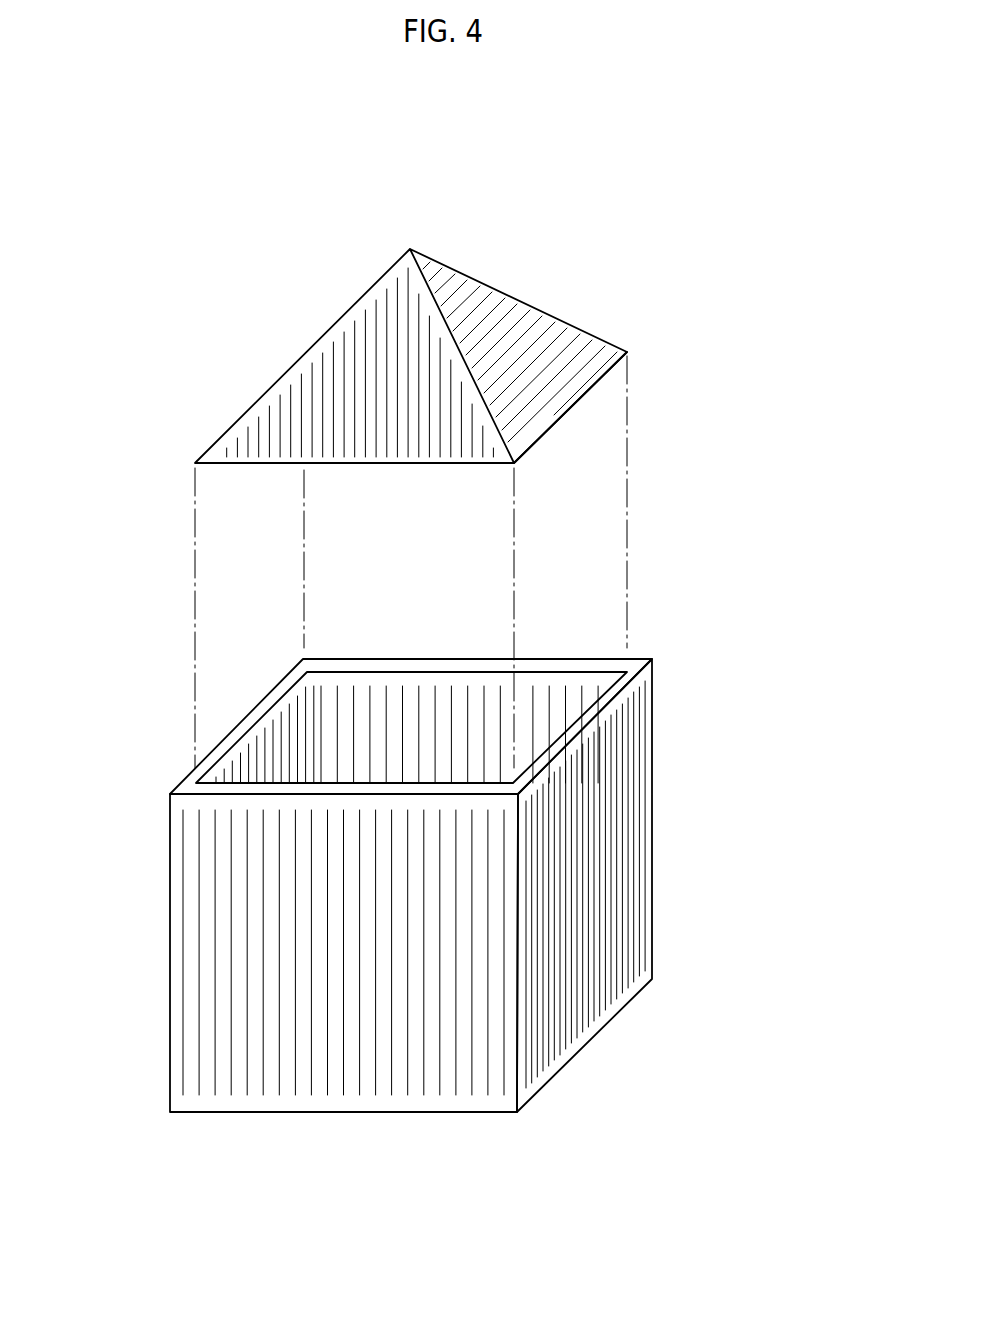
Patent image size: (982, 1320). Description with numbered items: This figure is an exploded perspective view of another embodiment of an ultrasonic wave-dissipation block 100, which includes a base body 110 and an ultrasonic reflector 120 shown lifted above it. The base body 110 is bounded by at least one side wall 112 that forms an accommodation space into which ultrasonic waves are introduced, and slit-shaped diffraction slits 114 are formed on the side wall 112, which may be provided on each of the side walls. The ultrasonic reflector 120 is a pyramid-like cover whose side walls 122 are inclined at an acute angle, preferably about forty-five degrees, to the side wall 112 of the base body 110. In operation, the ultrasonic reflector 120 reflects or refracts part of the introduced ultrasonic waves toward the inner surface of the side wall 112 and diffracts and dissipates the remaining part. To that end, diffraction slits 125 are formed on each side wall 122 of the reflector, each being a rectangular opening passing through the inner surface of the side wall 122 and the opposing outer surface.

The ultrasonic wave-dissipation block 100 is at (722, 482).
The base body 110 is at (669, 726).
The side wall 112 is at (648, 818).
The diffraction slits 114 is at (202, 957).
The ultrasonic reflector 120 is at (571, 287).
The side wall 122 is at (612, 357).
The diffraction slits 125 is at (493, 300).